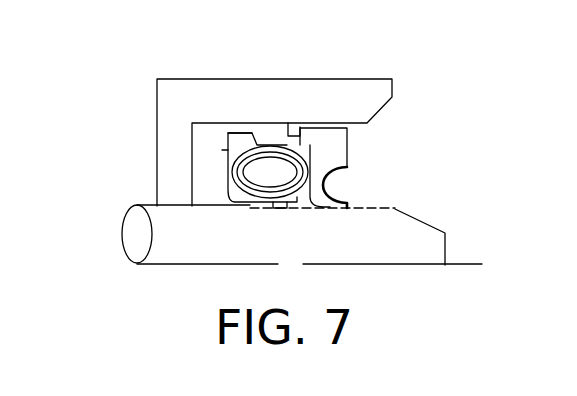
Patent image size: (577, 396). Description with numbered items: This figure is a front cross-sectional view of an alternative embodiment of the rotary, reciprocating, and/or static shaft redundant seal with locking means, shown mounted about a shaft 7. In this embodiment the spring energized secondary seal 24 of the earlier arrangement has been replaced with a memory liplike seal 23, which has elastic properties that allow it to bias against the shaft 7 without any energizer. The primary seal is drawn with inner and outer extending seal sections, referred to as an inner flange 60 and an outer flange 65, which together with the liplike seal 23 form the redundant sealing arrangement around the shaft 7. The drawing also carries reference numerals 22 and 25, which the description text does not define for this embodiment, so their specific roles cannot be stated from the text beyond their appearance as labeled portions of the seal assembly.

The shaft 7 is at (423, 249).
The seal carrier 22 is at (246, 206).
The memory liplike seal 23 is at (358, 203).
The secondary seal 24 is at (348, 151).
The notch 25 is at (297, 132).
The inner flange 60 is at (276, 208).
The outer flange 65 is at (264, 127).